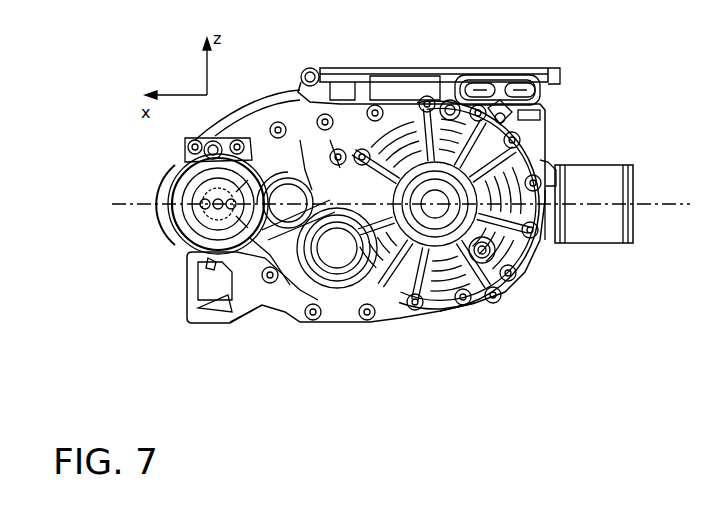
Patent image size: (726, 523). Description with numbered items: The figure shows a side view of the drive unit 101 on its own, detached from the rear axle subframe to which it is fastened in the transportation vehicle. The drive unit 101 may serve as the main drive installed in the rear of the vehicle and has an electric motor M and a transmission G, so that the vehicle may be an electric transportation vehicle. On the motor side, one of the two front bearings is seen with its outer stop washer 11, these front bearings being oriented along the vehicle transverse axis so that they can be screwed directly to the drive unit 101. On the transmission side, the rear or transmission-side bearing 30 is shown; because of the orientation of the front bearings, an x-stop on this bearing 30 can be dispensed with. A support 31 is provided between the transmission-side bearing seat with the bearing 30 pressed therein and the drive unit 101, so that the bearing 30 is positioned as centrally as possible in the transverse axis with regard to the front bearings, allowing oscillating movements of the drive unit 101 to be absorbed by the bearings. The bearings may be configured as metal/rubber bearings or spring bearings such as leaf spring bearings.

The drive unit 101 is at (592, 85).
The outer stop washer 11 is at (183, 213).
The support 31 is at (549, 163).
The transmission-side bearing 30 is at (607, 180).
The electric motor M is at (255, 312).
The transmission G is at (452, 314).